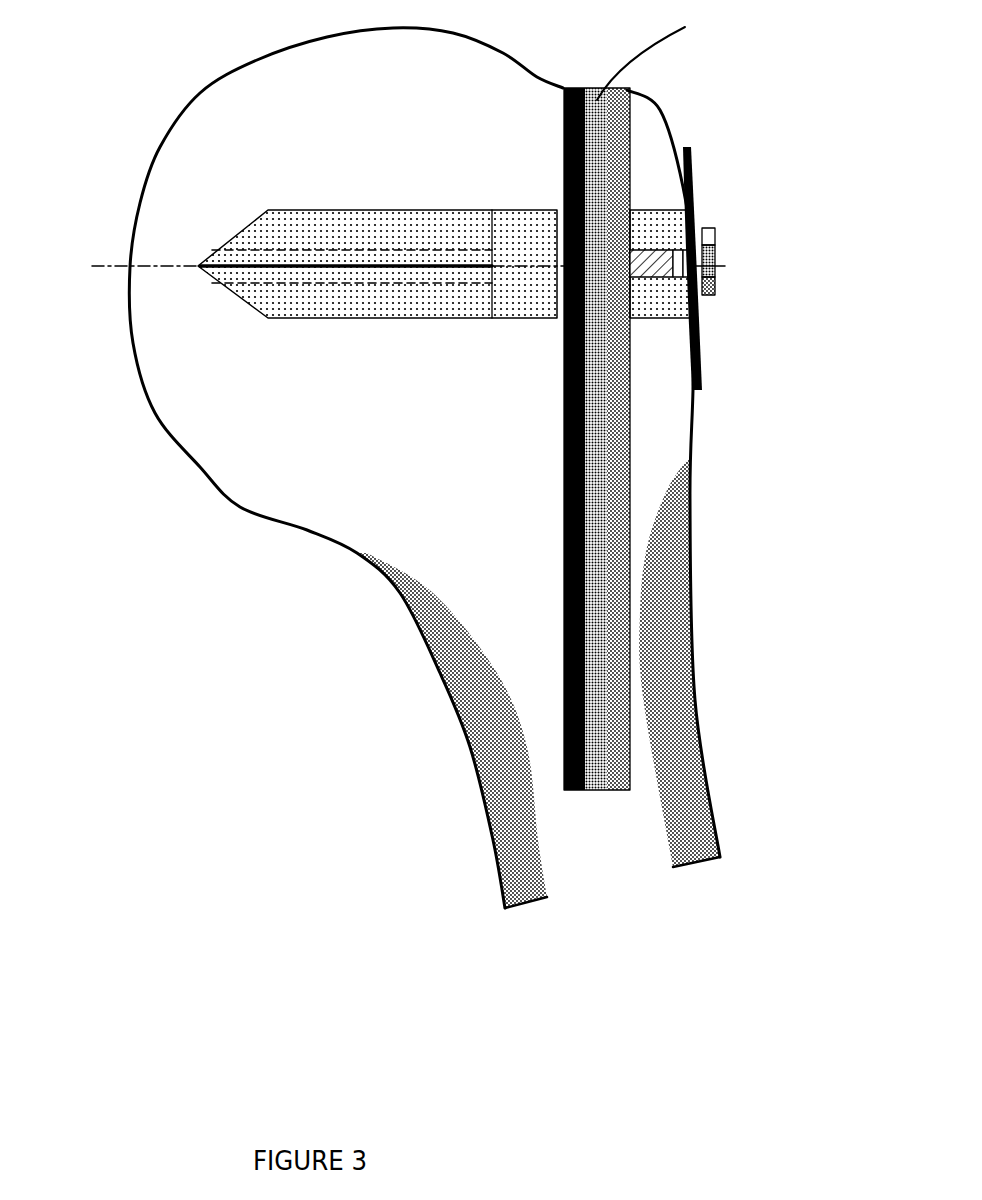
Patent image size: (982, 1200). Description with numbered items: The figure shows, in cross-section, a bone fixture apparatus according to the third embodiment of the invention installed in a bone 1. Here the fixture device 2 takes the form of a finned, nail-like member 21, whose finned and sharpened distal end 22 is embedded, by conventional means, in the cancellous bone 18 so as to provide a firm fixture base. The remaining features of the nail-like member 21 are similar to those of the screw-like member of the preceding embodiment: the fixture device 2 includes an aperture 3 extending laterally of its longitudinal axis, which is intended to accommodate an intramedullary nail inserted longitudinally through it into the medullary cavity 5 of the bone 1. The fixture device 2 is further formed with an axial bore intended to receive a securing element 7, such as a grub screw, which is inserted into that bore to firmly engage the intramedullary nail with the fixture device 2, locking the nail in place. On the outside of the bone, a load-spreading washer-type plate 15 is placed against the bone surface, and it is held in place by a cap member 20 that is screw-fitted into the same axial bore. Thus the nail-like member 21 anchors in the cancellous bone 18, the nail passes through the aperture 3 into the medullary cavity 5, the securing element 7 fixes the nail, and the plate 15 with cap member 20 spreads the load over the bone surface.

The bone 1 is at (675, 778).
The fixture device 2 is at (487, 353).
The aperture 3 is at (633, 218).
The medullary cavity 5 is at (523, 680).
The securing element 7 is at (705, 360).
The load-spreading washer-type plate 15 is at (695, 198).
The cancellous bone 18 is at (170, 213).
The cap member 20 is at (717, 268).
The finned, nail-like member 21 is at (293, 300).
The sharpened distal end 22 is at (247, 283).